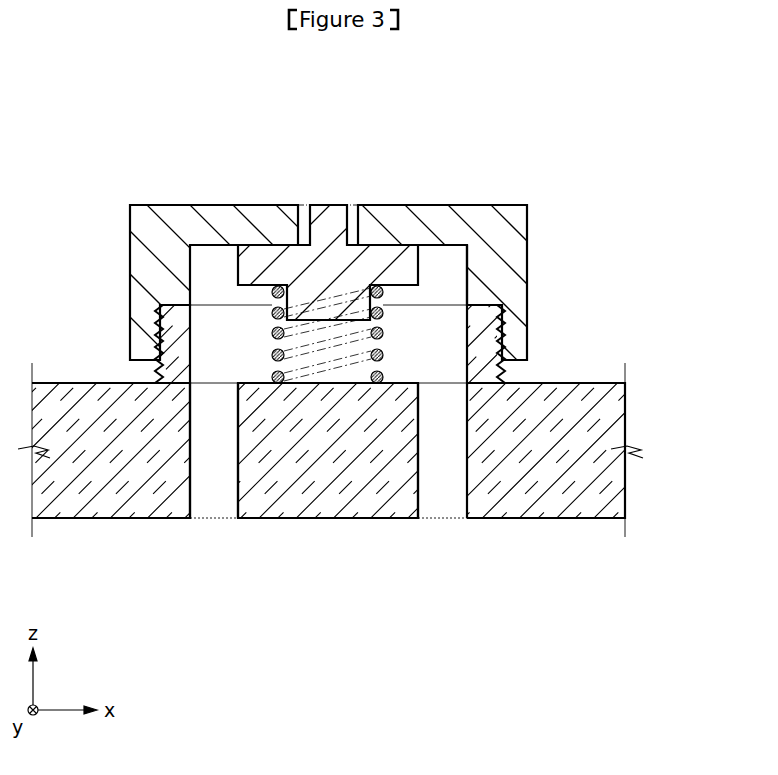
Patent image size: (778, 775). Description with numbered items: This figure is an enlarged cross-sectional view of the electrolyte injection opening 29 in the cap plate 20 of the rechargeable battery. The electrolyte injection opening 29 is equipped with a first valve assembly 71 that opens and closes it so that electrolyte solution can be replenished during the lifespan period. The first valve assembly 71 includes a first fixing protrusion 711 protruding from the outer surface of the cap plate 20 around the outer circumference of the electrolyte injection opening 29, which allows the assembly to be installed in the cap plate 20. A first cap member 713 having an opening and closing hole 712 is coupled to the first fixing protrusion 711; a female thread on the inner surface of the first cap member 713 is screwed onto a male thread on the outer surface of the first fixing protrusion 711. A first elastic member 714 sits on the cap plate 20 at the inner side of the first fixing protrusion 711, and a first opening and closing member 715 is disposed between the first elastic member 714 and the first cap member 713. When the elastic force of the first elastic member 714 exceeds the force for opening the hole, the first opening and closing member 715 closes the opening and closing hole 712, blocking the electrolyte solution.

The cap plate 20 is at (598, 488).
The electrolyte injection opening 29 is at (215, 500).
The first valve assembly 71 is at (389, 303).
The first fixing protrusion 711 is at (482, 337).
The opening and closing hole 712 is at (352, 215).
The first cap member 713 is at (473, 215).
The first elastic member 714 is at (383, 327).
The first opening and closing member 715 is at (326, 215).